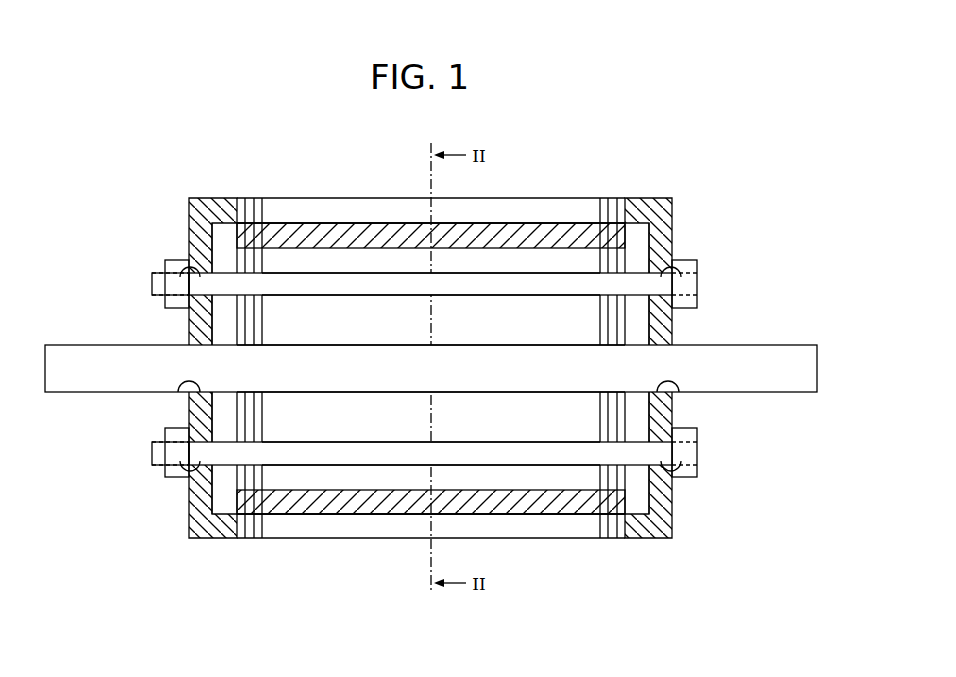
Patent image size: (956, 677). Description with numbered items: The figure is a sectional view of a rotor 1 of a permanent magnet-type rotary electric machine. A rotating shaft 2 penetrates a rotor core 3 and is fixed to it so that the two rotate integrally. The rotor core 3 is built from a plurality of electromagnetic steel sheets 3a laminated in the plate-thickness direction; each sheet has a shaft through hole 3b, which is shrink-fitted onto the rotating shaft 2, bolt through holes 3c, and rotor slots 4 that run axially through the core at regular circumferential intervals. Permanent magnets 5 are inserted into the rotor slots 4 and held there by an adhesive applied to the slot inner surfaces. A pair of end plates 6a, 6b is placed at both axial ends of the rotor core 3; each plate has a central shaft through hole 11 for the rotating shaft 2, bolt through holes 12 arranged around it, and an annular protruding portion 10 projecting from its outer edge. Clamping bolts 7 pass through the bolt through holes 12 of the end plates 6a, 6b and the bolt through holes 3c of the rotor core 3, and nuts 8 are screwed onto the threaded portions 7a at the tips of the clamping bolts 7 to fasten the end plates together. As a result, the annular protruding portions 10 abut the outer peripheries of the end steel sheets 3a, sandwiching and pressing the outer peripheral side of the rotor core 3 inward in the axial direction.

The rotor 1 is at (664, 162).
The rotating shaft 2 is at (780, 352).
The rotor core 3 is at (303, 210).
The electromagnetic steel sheets 3a is at (262, 198).
The shaft through hole 3b is at (553, 352).
The bolt through holes 3c is at (386, 275).
The rotor slots 4 is at (516, 228).
The permanent magnets 5 is at (346, 228).
The end plate 6a is at (186, 196).
The end plate 6b is at (676, 196).
The clamping bolts 7 is at (694, 290).
The threaded portions 7a is at (153, 289).
The nuts 8 is at (173, 306).
The annular protruding portion 10 is at (237, 211).
The shaft through hole 11 is at (178, 392).
The bolt through holes 12 is at (190, 268).